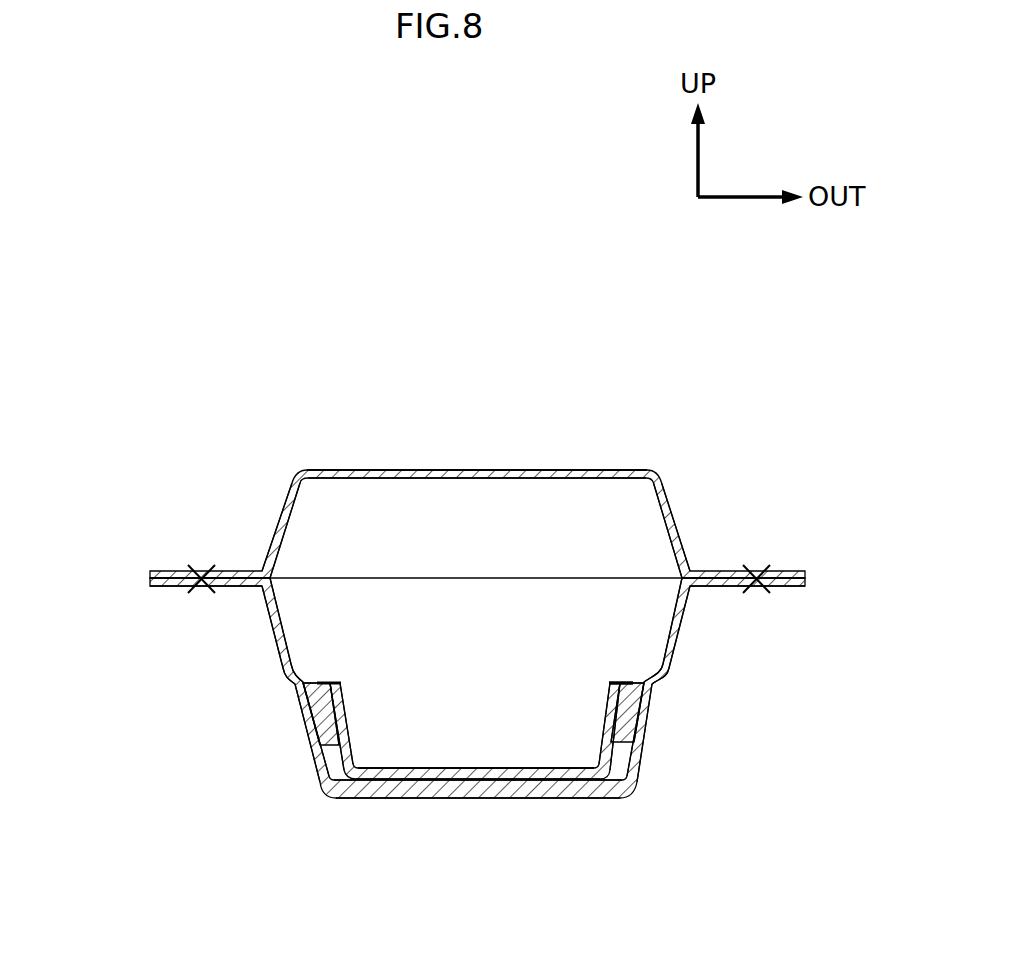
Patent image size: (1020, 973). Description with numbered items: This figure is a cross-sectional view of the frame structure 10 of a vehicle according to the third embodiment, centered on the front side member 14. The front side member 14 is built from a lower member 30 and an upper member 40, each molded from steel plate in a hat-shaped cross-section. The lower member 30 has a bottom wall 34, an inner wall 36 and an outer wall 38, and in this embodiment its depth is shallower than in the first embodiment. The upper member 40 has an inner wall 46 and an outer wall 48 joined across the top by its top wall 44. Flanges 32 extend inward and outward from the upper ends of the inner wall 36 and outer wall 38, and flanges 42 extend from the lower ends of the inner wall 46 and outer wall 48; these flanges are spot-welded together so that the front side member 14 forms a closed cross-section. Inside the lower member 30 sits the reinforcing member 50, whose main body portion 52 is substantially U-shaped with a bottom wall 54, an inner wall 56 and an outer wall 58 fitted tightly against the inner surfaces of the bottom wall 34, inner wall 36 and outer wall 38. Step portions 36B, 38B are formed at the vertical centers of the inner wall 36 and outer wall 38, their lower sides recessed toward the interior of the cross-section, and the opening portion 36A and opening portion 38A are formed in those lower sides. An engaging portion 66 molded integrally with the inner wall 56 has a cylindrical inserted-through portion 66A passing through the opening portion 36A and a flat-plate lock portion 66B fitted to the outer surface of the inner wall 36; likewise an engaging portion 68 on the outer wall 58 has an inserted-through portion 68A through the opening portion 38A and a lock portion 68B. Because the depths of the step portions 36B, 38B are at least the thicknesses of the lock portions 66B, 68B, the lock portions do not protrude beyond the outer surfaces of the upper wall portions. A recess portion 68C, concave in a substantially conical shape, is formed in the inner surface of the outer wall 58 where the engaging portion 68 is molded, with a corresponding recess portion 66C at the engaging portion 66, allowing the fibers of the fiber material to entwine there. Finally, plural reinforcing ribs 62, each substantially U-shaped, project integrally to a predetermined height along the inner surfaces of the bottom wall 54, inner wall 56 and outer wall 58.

The vehicle battery case 10 is at (323, 410).
The front side member 14 is at (445, 462).
The lower member 30 is at (340, 806).
The flanges 32 is at (172, 588).
The bottom wall 34 is at (483, 800).
The inner wall 36 is at (278, 648).
The opening portion 36A is at (312, 750).
The step portion 36B is at (295, 684).
The outer wall 38 is at (680, 614).
The opening portion 38A is at (650, 718).
The step portion 38B is at (653, 690).
The upper member 40 is at (600, 460).
The flanges 42 is at (192, 570).
The top wall 44 is at (482, 468).
The inner wall 46 is at (288, 500).
The outer wall 48 is at (670, 518).
The reinforcing member 50 is at (632, 670).
The main body portion 52 is at (475, 731).
The bottom wall 54 is at (417, 778).
The inner wall 56 is at (340, 684).
The outer wall 58 is at (612, 686).
The reinforcing ribs 62 is at (473, 767).
The engaging portion 66 is at (308, 760).
The inserted-through portion 66A is at (319, 682).
The lock portion 66B is at (306, 718).
The inner face of adhesive block 66C is at (338, 706).
The engaging portion 68 is at (655, 756).
The inserted-through portion 68A is at (614, 722).
The lock portion 68B is at (642, 740).
The recess portion 68C is at (598, 697).